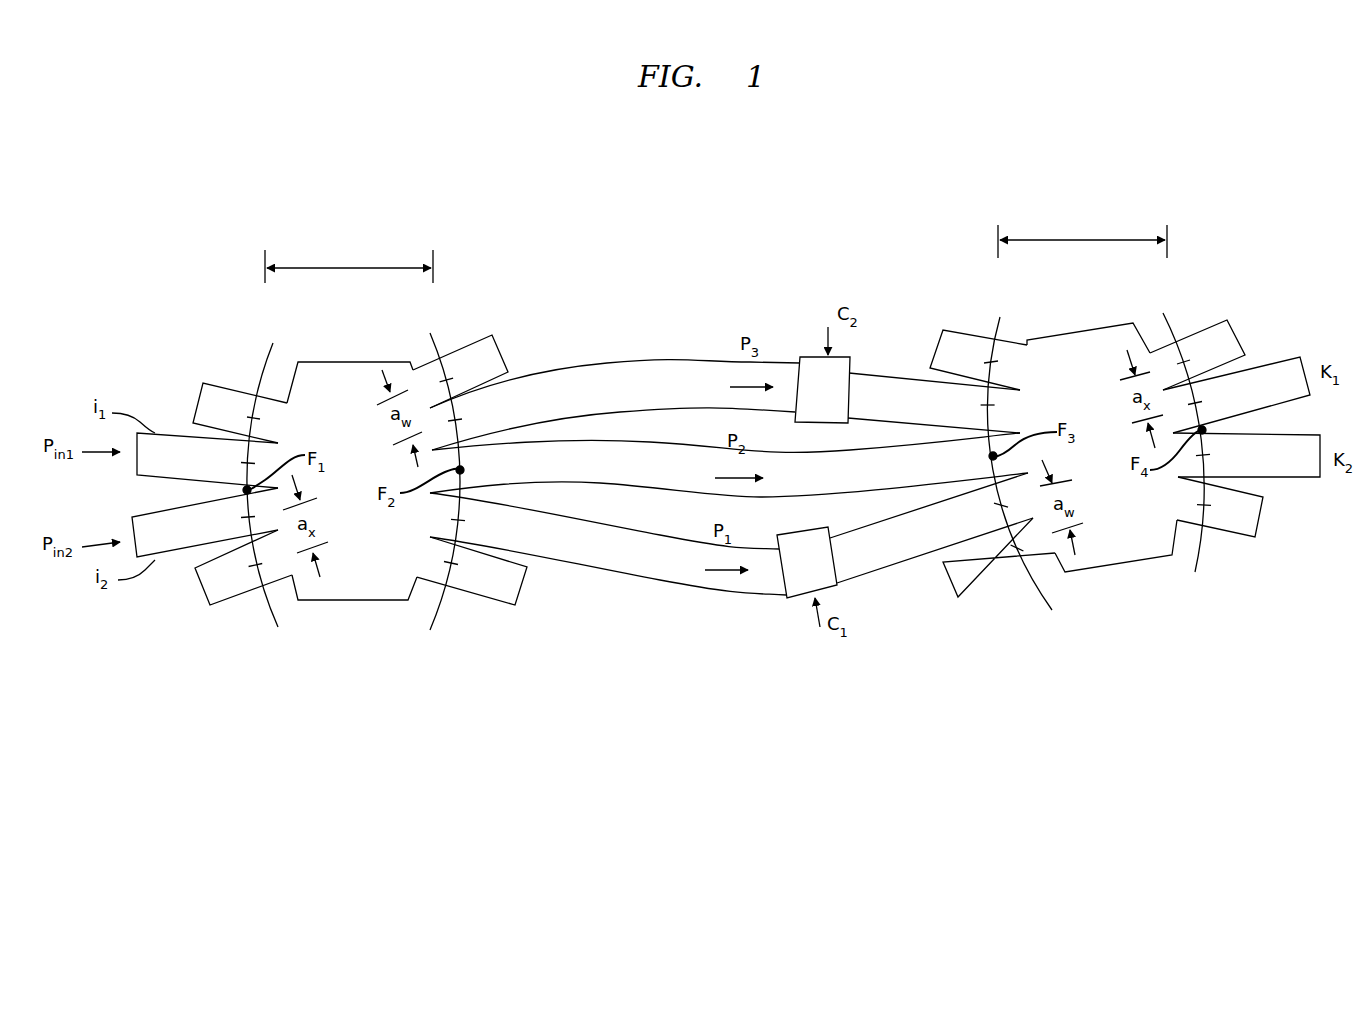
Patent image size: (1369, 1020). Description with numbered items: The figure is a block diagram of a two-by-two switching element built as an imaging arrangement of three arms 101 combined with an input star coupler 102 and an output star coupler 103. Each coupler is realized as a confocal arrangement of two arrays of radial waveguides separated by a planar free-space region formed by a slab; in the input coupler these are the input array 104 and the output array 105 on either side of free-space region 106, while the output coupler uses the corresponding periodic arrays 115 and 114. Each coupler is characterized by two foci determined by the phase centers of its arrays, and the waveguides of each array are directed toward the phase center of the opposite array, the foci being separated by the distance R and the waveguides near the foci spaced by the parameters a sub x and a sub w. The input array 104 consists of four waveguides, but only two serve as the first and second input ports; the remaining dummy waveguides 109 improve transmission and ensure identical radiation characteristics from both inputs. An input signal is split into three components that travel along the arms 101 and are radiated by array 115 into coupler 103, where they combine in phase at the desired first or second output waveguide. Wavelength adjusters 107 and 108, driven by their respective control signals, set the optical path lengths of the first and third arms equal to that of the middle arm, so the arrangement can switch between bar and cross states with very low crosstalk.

The arms 101 is at (948, 227).
The input star coupler 102 is at (460, 238).
The output star coupler 103 is at (1193, 210).
The input array 104 is at (254, 380).
The output array of the input coupler 105 is at (499, 327).
The free-space region 106 is at (352, 362).
The wavelength adjuster 107 is at (838, 583).
The wavelength adjuster 108 is at (848, 358).
The dummy waveguides 109 is at (207, 407).
The periodic array 114 is at (1210, 294).
The periodic array 115 is at (1023, 324).